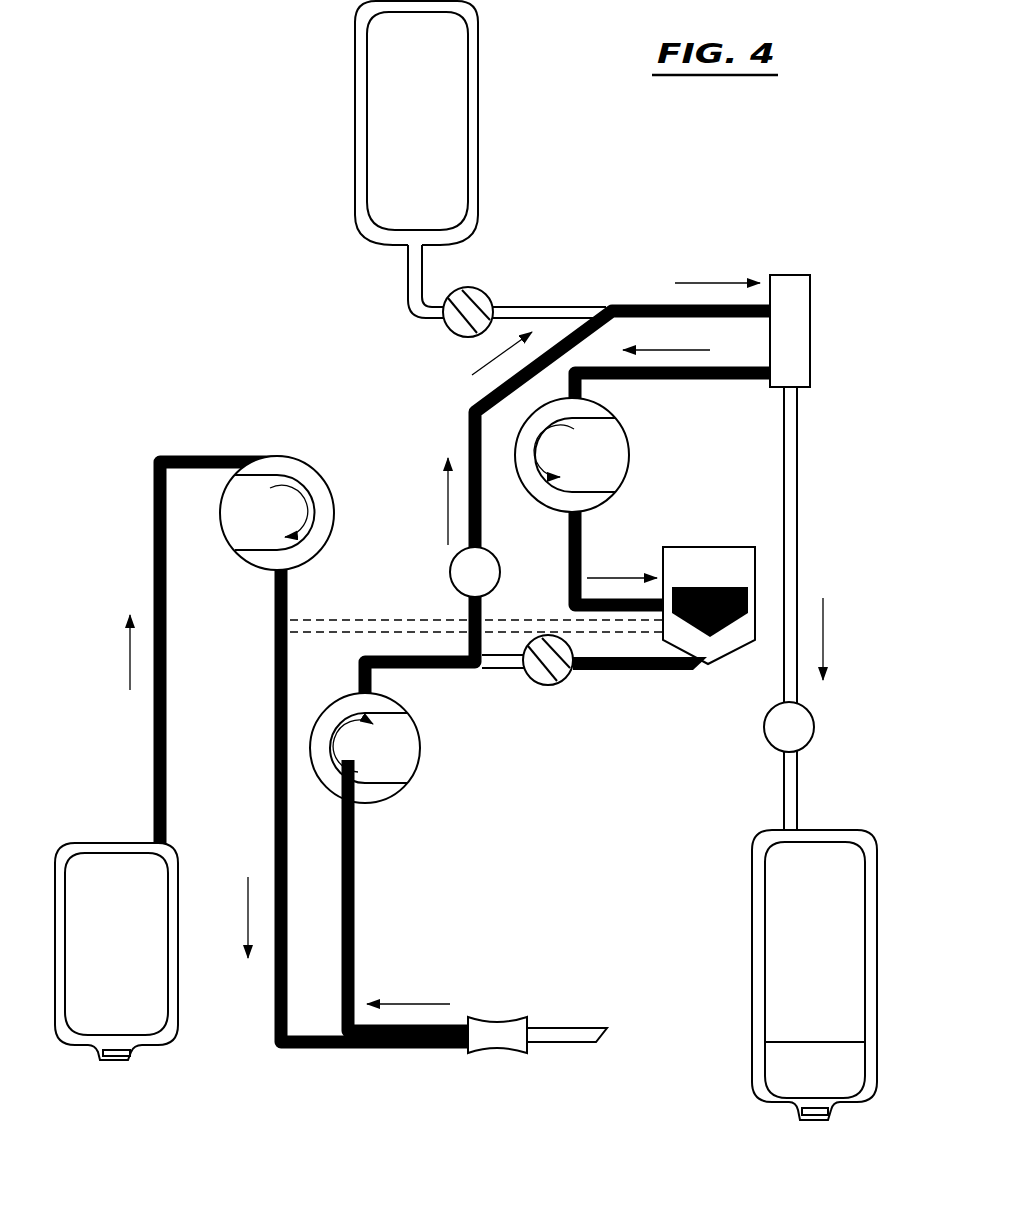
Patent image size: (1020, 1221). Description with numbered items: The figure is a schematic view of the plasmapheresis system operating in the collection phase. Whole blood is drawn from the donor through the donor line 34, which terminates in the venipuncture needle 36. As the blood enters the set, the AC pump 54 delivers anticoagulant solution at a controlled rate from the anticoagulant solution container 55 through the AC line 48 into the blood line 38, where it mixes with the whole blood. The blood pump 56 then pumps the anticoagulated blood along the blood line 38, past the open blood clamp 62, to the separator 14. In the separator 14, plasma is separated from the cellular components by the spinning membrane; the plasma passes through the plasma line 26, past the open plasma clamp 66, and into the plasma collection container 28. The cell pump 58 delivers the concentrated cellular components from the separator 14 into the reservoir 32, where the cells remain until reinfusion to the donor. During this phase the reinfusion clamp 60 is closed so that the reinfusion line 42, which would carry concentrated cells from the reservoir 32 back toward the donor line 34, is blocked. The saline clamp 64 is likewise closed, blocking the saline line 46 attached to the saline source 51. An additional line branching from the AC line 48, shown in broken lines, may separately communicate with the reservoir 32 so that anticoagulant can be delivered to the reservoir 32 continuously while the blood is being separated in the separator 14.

The separator 14 is at (800, 330).
The plasma line 26 is at (798, 790).
The plasma collection container 28 is at (793, 908).
The reservoir 32 is at (697, 565).
The donor line 34 is at (356, 888).
The venipuncture needle 36 is at (562, 1036).
The blood line 38 is at (470, 407).
The reinfusion line 42 is at (633, 672).
The saline line 46 is at (408, 290).
The AC line 48 is at (276, 757).
The saline source 51 is at (433, 146).
The AC pump 54 is at (278, 454).
The anticoagulant solution container 55 is at (97, 1023).
The blood pump 56 is at (405, 748).
The cell pump 58 is at (610, 463).
The reinfusion clamp 60 is at (549, 687).
The blood clamp 62 is at (452, 570).
The saline clamp 64 is at (480, 302).
The plasma clamp 66 is at (805, 725).